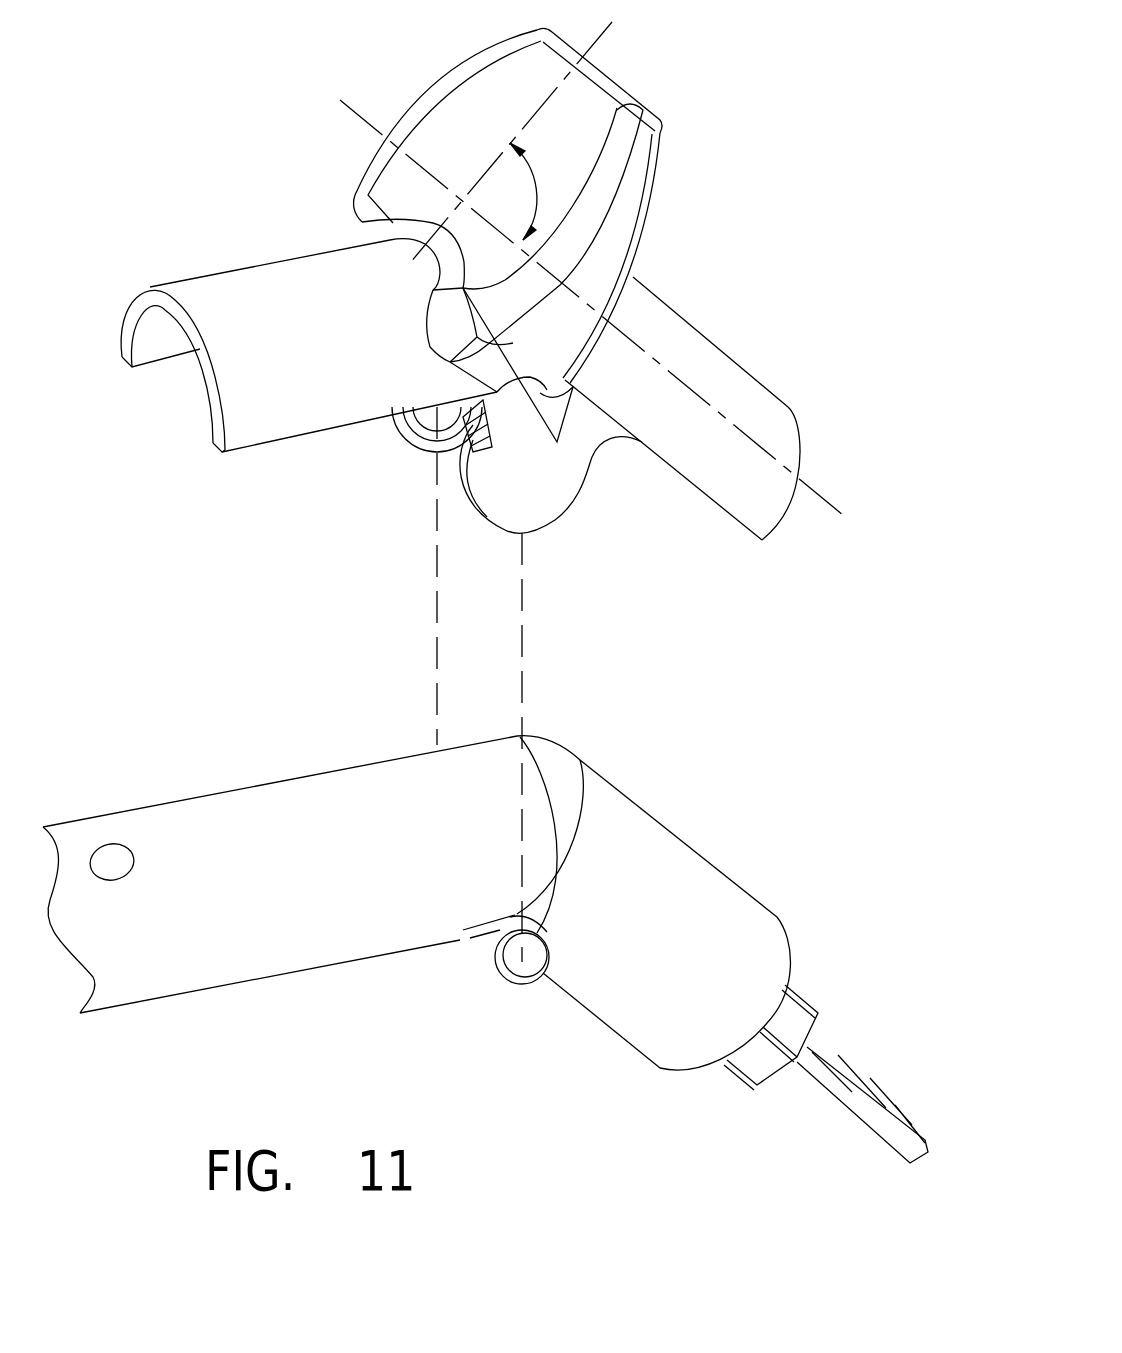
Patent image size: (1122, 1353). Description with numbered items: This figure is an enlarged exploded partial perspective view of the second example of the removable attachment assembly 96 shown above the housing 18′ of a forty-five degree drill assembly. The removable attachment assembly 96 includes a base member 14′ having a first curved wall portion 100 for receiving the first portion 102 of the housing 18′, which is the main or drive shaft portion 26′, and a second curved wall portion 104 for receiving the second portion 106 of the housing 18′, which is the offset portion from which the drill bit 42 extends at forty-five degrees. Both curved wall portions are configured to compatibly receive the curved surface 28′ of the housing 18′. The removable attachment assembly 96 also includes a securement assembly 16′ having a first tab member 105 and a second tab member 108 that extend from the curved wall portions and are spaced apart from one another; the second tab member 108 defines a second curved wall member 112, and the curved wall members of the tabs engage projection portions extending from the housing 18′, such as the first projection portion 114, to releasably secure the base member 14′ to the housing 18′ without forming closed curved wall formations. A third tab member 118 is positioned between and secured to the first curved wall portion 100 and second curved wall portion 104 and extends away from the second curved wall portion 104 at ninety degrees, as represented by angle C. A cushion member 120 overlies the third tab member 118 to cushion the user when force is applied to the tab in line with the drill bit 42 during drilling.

The removable attachment assembly 96 is at (712, 82).
The cushion member 120 is at (572, 100).
The third tab member 118 is at (575, 202).
The angle C is at (542, 180).
The first curved wall portion 100 is at (236, 293).
The second curved wall portion 104 is at (737, 397).
The first tab member 105 is at (557, 483).
The second tab member 108 is at (430, 410).
The second curved wall member 112 is at (427, 423).
The base member 14′ is at (330, 283).
The securement assembly 16′ is at (379, 463).
The first portion of housing 102 is at (388, 785).
The main or drive shaft portion 26′ is at (192, 857).
The curved surface 28′ is at (349, 829).
The housing 18′ is at (153, 968).
The second portion of housing 106 is at (653, 1010).
The first projection portion 114 is at (487, 947).
The drill bit 42 is at (877, 1103).